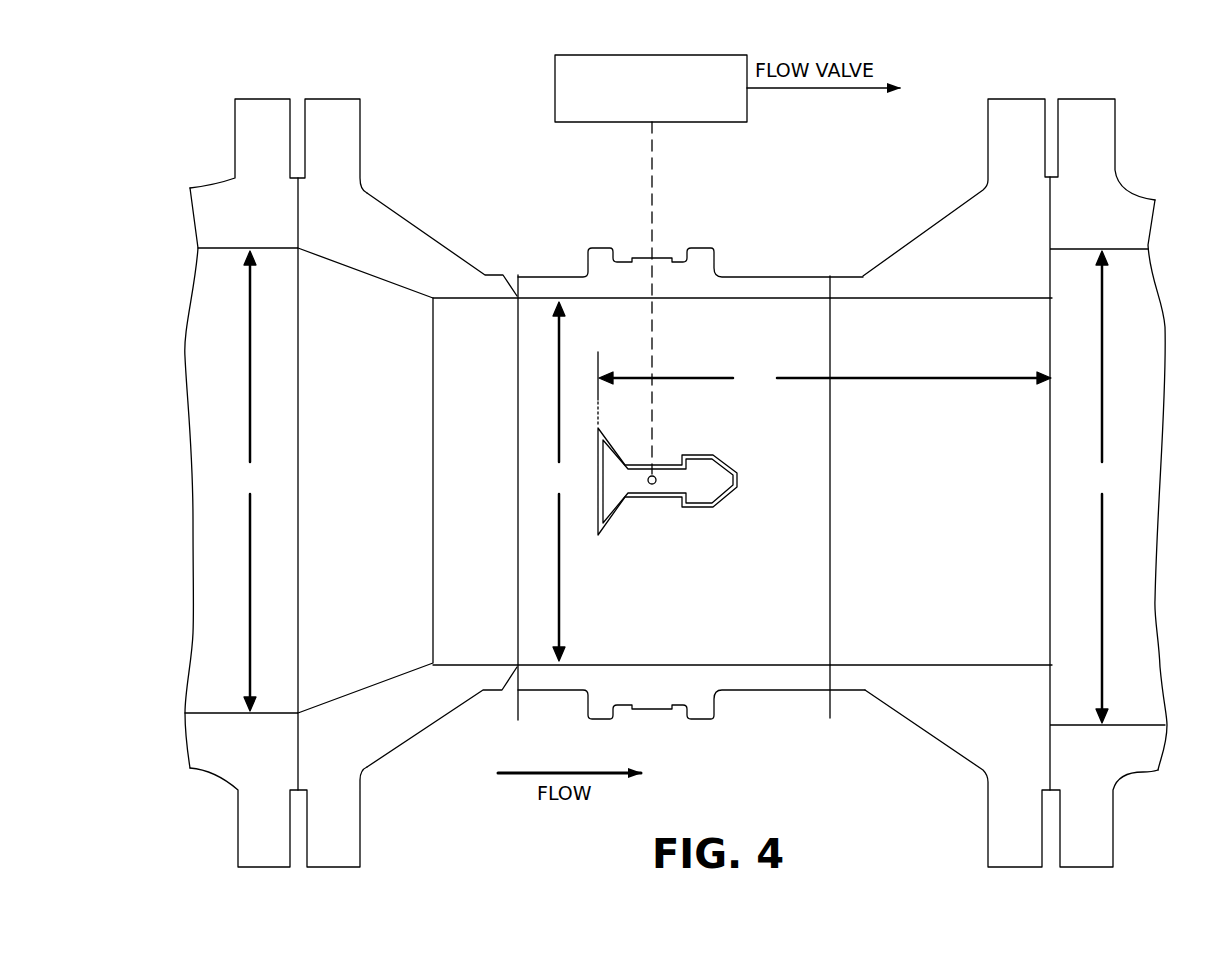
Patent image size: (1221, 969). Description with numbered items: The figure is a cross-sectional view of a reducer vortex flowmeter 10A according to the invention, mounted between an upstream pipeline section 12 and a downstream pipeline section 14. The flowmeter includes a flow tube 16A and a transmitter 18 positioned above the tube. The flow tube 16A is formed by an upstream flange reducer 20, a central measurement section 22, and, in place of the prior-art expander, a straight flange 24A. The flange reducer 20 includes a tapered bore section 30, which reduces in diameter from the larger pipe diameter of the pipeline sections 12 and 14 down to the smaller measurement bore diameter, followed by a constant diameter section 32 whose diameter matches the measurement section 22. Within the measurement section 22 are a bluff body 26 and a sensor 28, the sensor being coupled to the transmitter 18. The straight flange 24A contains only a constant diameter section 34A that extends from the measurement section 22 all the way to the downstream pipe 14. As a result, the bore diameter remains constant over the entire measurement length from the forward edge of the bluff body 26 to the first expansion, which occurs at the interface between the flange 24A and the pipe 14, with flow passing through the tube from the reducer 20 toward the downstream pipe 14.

The reducer vortex flowmeter 10A is at (464, 800).
The pipeline section 12 is at (215, 155).
The pipeline section 14 is at (1143, 160).
The flow tube 16A is at (806, 724).
The transmitter 18 is at (608, 123).
The upstream flange reducer 20 is at (403, 183).
The measurement section 22 is at (769, 250).
The straight flange 24A is at (941, 157).
The bluff body 26 is at (615, 556).
The sensor 28 is at (657, 486).
The tapered bore section 30 is at (365, 480).
The constant diameter section 32 is at (631, 497).
The constant diameter section 34A is at (941, 497).